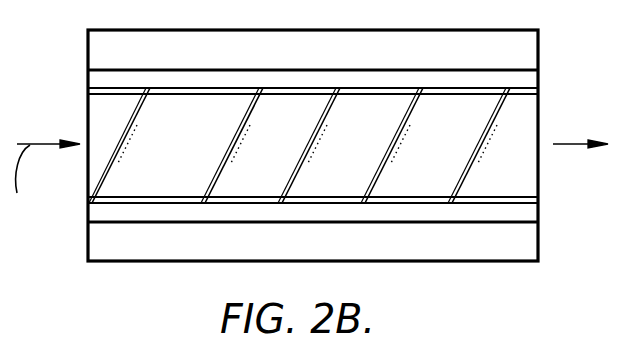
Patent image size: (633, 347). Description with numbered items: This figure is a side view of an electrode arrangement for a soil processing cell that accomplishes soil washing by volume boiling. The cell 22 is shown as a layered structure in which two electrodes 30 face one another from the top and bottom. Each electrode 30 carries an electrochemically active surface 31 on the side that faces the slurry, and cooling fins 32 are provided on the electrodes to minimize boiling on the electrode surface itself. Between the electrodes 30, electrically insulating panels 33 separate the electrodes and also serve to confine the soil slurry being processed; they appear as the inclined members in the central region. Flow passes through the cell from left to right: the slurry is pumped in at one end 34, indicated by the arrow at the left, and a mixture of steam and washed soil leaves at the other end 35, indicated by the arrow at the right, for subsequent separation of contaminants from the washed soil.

The laminated sheet 22 is at (371, 262).
The electrodes 30 is at (97, 81).
The electrochemically active surfaces 31 is at (118, 97).
The cooling fins 32 is at (513, 55).
The electrically insulating panels 33 is at (518, 162).
The one end 34 is at (48, 179).
The other end 35 is at (565, 138).